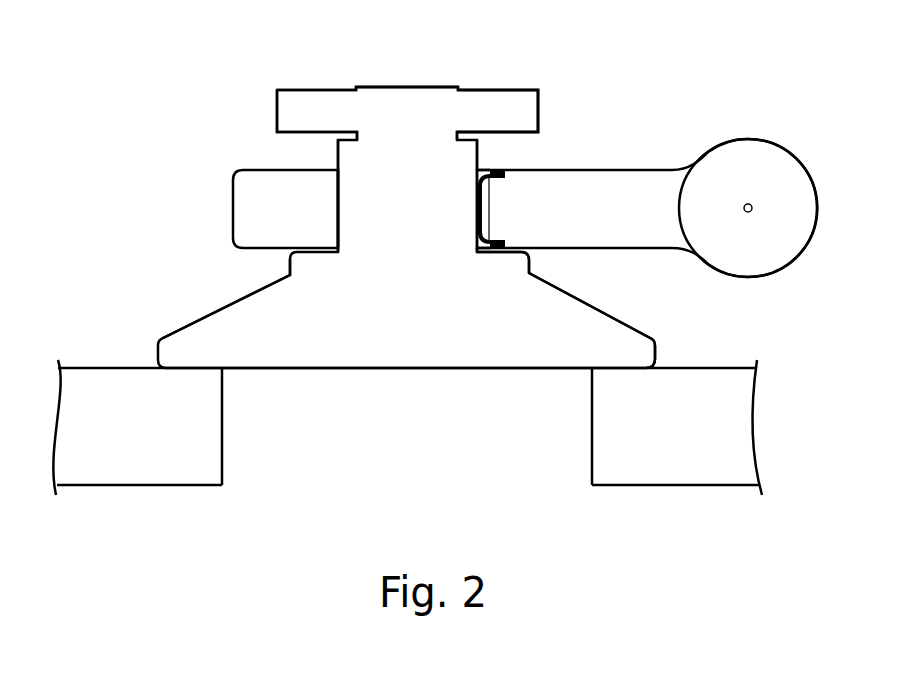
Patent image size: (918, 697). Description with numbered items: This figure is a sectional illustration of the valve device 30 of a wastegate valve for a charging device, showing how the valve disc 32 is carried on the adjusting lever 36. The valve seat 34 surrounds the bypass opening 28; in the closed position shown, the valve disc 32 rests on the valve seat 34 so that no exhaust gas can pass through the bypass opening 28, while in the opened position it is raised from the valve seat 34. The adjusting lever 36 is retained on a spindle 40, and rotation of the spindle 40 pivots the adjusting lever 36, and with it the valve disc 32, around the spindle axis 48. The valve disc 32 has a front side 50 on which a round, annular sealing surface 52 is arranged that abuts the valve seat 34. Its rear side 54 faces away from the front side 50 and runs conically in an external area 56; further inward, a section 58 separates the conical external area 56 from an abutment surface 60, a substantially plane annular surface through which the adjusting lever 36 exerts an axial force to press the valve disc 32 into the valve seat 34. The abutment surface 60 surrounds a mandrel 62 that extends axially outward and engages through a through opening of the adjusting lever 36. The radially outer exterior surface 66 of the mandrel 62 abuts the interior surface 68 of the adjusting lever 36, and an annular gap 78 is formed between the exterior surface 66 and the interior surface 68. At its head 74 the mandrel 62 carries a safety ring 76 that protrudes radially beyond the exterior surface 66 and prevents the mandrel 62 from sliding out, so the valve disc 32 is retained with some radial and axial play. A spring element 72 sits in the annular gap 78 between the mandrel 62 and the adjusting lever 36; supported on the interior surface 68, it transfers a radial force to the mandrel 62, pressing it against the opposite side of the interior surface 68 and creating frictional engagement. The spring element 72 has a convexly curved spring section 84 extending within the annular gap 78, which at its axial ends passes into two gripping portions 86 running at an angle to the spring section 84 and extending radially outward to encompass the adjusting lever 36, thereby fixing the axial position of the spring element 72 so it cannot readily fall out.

The bypass opening 28 is at (407, 456).
The valve device 30 is at (491, 251).
The valve disc 32 is at (243, 312).
The valve seat 34 is at (202, 370).
The adjusting lever 36 is at (668, 166).
The spindle 40 is at (769, 166).
The spindle axis 48 is at (752, 205).
The front side 50 is at (445, 251).
The sealing surface 52 is at (641, 367).
The rear side 54 is at (239, 195).
The external area 56 is at (598, 330).
The section 58 is at (532, 272).
The abutment surface 60 is at (313, 248).
The mandrel 62 is at (427, 97).
The exterior surface 66 is at (497, 170).
The interior surface 68 is at (343, 231).
The spring element 72 is at (537, 229).
The head 74 is at (410, 95).
The safety ring 76 is at (528, 95).
The annular gap 78 is at (337, 192).
The spring section 84 is at (503, 248).
The gripping portions 86 is at (492, 171).